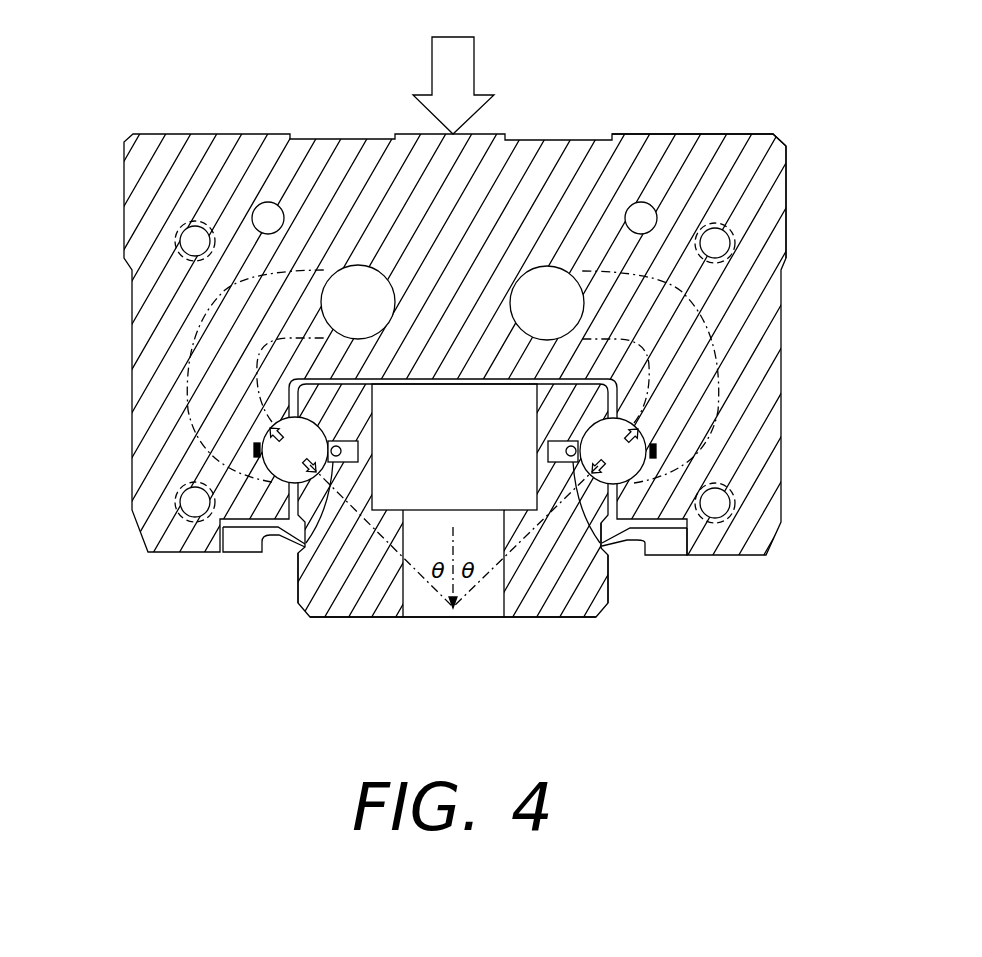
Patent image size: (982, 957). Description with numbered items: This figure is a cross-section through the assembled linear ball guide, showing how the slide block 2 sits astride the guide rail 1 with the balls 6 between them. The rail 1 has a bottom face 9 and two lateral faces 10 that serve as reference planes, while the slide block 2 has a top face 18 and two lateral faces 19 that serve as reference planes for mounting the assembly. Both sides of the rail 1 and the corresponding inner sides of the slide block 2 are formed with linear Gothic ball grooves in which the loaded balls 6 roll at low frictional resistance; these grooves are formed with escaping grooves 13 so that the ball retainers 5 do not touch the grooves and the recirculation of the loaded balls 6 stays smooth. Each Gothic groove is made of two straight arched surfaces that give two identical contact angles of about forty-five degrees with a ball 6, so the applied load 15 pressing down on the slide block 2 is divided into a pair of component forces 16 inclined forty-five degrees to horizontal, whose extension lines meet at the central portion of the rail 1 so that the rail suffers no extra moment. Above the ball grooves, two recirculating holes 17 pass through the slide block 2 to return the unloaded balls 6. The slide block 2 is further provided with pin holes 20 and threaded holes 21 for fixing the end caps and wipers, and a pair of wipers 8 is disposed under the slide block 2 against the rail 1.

The guide rail 1 is at (335, 618).
The slide block 2 is at (565, 143).
The ball retainer 5 is at (605, 541).
The balls 6 is at (283, 417).
The wiper 8 is at (670, 533).
The bottom face 9 is at (515, 620).
The lateral face 10 is at (605, 548).
The escaping groove 13 is at (535, 450).
The applied load 15 is at (458, 83).
The component force 16 is at (648, 452).
The recirculating hole 17 is at (560, 267).
The top face 18 is at (738, 135).
The lateral face 19 is at (787, 192).
The pin hole 20 is at (643, 213).
The threaded hole 21 is at (733, 520).